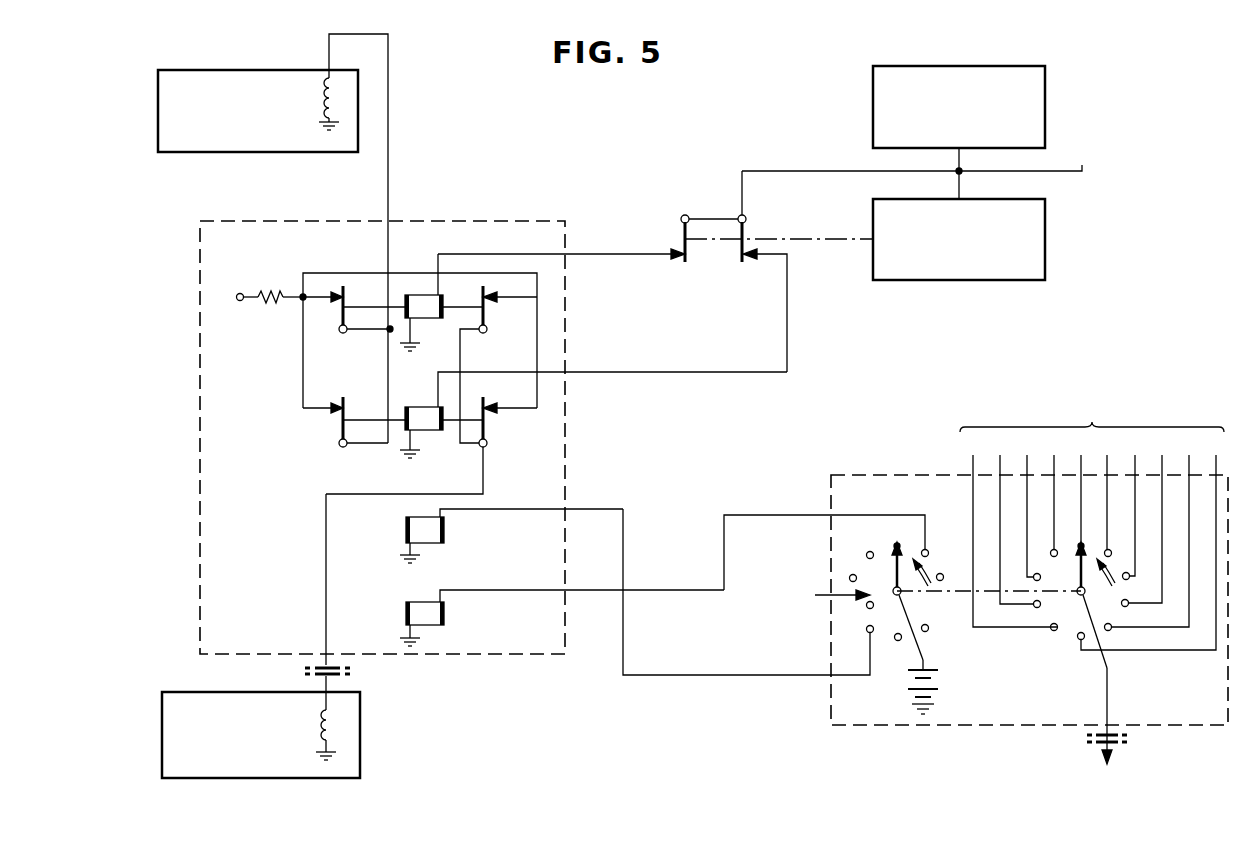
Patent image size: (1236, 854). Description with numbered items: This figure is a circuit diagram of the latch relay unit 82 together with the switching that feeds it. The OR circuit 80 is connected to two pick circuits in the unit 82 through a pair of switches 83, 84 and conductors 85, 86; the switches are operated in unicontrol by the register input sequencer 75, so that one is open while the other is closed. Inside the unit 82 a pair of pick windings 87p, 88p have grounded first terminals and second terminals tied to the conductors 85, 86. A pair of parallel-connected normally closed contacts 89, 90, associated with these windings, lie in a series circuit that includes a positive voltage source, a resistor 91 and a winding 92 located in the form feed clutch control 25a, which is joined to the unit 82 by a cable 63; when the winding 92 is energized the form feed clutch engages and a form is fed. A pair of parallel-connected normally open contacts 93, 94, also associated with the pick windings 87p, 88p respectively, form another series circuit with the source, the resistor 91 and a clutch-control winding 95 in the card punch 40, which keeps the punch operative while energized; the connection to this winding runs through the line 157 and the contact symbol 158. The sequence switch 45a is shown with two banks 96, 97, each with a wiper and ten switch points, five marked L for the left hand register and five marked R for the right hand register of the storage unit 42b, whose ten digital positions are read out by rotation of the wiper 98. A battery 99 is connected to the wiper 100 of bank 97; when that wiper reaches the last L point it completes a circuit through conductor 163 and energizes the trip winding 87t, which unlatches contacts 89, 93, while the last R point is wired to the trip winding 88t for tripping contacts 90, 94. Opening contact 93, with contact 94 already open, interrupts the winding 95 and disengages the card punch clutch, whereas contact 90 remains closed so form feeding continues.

The form feed clutch control 25a is at (232, 70).
The winding 92 is at (323, 86).
The cable 63 is at (388, 88).
The latch relay unit 82 is at (200, 342).
The resistor 91 is at (277, 304).
The normally closed contact 89 is at (340, 313).
The normally closed contact 90 is at (340, 432).
The normally open contact 93 is at (487, 316).
The normally open contact 94 is at (487, 430).
The pick winding 87p is at (418, 314).
The pick winding 88p is at (428, 408).
The trip winding 87t is at (430, 540).
The trip winding 88t is at (428, 606).
The switch 83 is at (681, 232).
The switch 84 is at (746, 232).
The conductor 85 is at (626, 255).
The conductor 86 is at (787, 294).
The OR circuit 80 is at (873, 81).
The register input sequencer 75 is at (873, 208).
The line to card punch clutch 157 is at (326, 630).
The contacts 158 is at (332, 682).
The clutch-control winding 95 is at (322, 714).
The conductor 163 is at (724, 555).
The sequence switch 45a is at (831, 692).
The bank 97 is at (830, 596).
The wiper 100 is at (896, 579).
The wiper 98 is at (1079, 579).
The battery 99 is at (935, 682).
The bank 96 is at (1073, 613).
The storage unit 42b is at (1092, 525).
The card punch 40 is at (1110, 727).